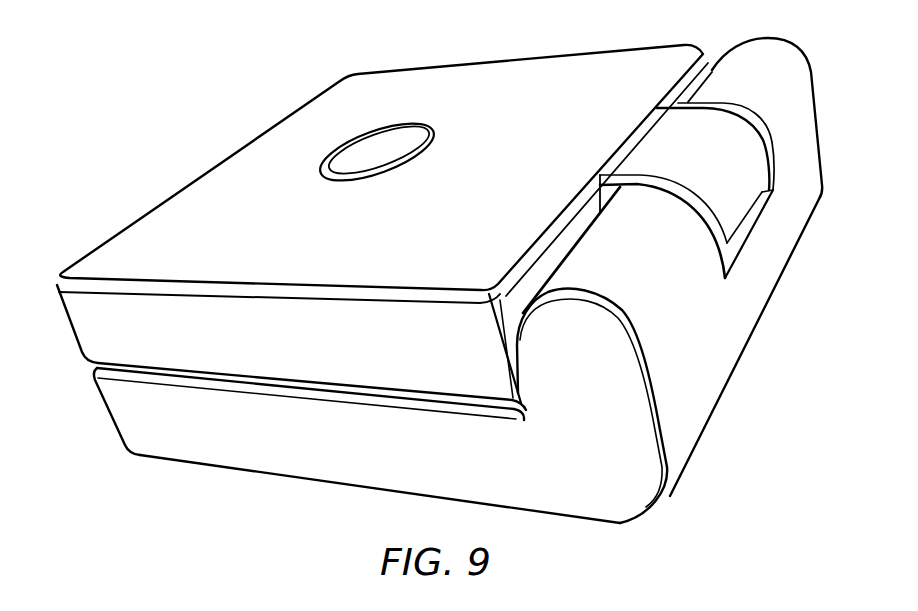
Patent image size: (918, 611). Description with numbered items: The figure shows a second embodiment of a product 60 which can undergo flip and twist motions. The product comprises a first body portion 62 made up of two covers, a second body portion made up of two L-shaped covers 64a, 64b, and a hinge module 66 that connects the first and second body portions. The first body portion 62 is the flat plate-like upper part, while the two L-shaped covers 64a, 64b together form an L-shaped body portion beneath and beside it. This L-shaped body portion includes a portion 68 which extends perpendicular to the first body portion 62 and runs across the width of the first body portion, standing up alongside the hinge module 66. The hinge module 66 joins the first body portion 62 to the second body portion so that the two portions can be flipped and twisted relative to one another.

The product 60 is at (245, 102).
The first body portion 62 is at (232, 180).
The L-shaped cover 64a is at (215, 442).
The L-shaped cover 64b is at (287, 477).
The hinge module 66 is at (640, 143).
The portion 68 is at (620, 363).